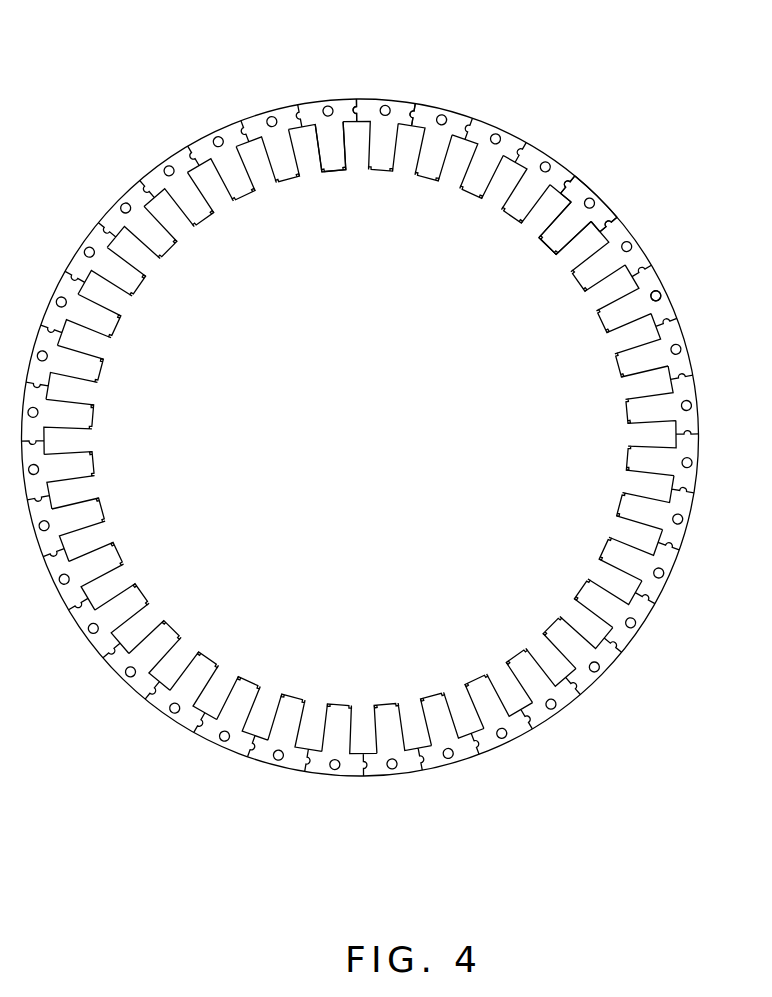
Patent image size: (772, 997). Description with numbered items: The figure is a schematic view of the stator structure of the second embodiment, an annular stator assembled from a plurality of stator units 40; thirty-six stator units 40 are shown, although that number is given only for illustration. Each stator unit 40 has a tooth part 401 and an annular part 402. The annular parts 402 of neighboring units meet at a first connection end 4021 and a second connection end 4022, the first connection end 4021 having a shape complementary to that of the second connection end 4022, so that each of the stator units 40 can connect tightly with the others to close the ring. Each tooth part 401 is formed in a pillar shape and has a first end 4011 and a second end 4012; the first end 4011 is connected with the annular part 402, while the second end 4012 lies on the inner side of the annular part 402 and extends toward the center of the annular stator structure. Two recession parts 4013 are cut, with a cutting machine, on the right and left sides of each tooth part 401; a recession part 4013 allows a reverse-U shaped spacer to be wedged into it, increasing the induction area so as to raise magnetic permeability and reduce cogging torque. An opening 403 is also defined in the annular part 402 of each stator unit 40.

The stator unit 40 is at (480, 137).
The tooth part 401 is at (565, 230).
The first end 4011 is at (330, 130).
The second end 4012 is at (333, 165).
The recession part 4013 is at (560, 255).
The annular part 402 is at (573, 192).
The first connection end 4021 is at (360, 114).
The second connection end 4022 is at (409, 104).
The opening 403 is at (659, 293).